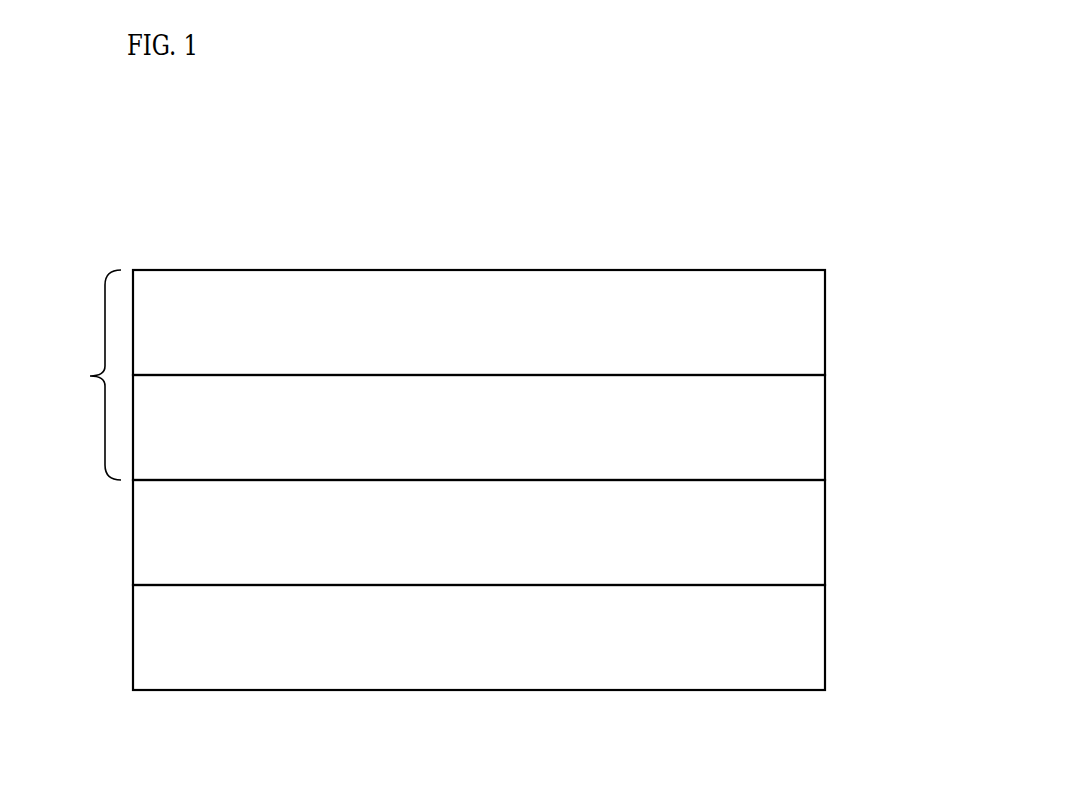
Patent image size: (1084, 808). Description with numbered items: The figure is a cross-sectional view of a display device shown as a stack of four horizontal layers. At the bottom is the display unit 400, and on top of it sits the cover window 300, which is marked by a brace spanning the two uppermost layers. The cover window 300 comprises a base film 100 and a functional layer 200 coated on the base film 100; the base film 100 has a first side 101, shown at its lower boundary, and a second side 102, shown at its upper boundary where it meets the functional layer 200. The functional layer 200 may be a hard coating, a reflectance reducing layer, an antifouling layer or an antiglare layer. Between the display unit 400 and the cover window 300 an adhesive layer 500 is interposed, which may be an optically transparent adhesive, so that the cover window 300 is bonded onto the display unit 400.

The base film 100 is at (815, 423).
The first side 101 is at (406, 480).
The second side 102 is at (468, 375).
The functional layer 200 is at (815, 318).
The cover window 300 is at (75, 375).
The display unit 400 is at (815, 633).
The adhesive layer 500 is at (815, 528).